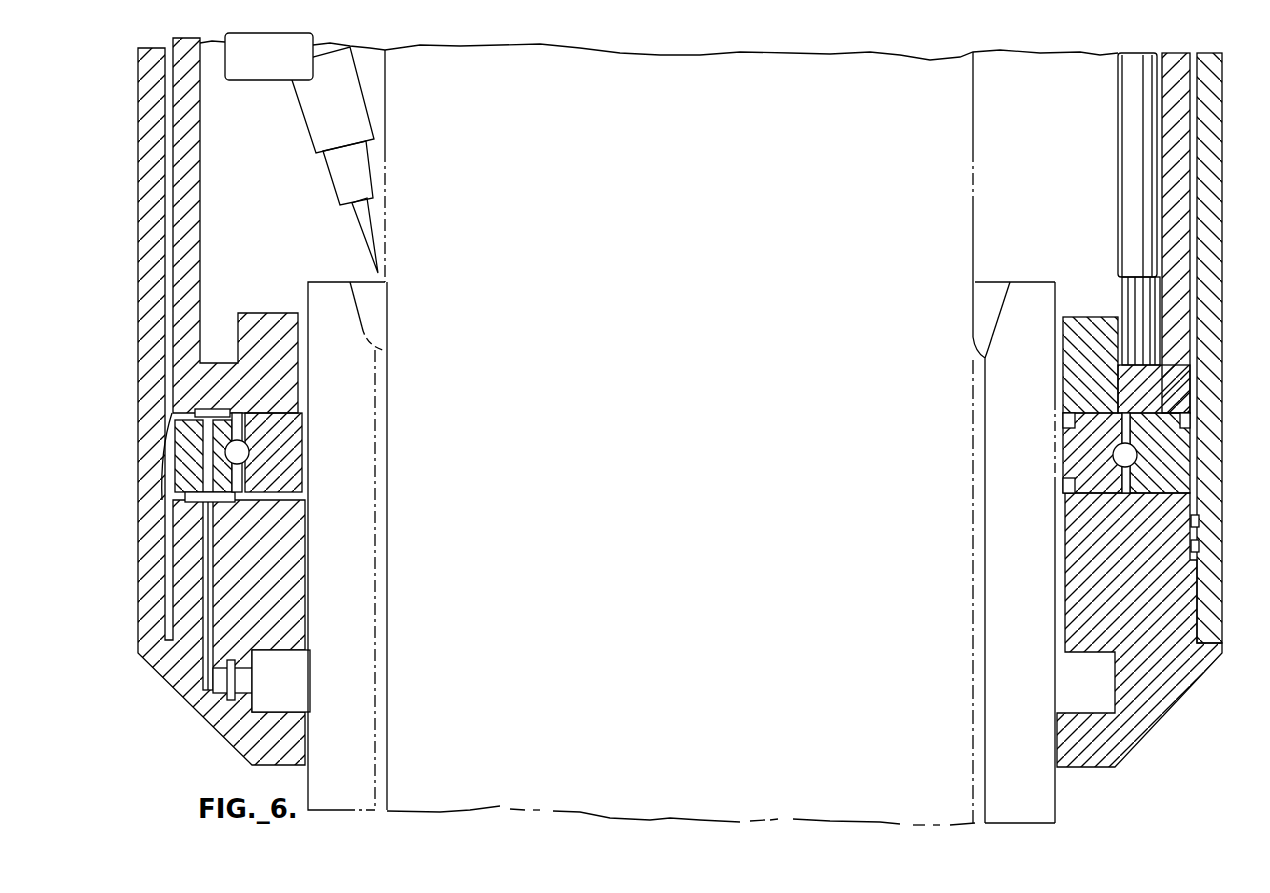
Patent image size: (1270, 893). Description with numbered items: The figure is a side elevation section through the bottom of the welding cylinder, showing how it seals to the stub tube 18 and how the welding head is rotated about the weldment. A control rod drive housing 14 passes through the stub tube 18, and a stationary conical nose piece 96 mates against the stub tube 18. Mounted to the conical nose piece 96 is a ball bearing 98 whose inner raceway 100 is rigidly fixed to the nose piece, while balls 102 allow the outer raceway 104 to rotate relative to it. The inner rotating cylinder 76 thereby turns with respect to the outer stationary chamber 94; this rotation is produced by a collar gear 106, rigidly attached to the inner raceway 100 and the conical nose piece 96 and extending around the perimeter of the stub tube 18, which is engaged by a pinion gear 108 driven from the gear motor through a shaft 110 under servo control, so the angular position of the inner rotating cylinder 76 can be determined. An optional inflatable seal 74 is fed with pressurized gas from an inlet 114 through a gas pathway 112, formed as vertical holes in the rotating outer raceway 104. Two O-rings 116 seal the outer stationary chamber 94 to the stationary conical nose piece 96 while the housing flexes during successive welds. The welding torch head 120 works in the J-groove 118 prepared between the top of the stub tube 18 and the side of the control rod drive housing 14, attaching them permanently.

The control rod drive housing 14 is at (680, 403).
The stub tube 18 is at (355, 746).
The seal 74 is at (290, 691).
The inner rotating cylinder 76 is at (202, 236).
The outer stationary chamber 94 is at (138, 268).
The conical nose piece 96 is at (1180, 685).
The ball bearing 98 is at (305, 437).
The inner raceway 100 is at (282, 463).
The balls 102 is at (177, 450).
The outer raceway 104 is at (1170, 470).
The collar gear 106 is at (1070, 317).
The pinion gear 108 is at (1160, 343).
The shaft 110 is at (1145, 177).
The gas pathway 112 is at (177, 480).
The inlet 114 is at (195, 413).
The O-rings 116 is at (1200, 520).
The J-groove 118 is at (978, 318).
The welding torch head 120 is at (367, 220).